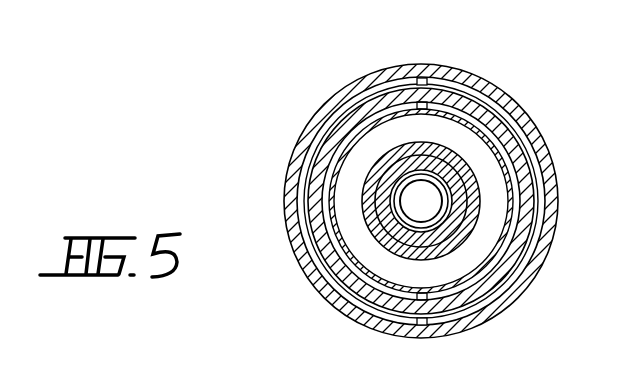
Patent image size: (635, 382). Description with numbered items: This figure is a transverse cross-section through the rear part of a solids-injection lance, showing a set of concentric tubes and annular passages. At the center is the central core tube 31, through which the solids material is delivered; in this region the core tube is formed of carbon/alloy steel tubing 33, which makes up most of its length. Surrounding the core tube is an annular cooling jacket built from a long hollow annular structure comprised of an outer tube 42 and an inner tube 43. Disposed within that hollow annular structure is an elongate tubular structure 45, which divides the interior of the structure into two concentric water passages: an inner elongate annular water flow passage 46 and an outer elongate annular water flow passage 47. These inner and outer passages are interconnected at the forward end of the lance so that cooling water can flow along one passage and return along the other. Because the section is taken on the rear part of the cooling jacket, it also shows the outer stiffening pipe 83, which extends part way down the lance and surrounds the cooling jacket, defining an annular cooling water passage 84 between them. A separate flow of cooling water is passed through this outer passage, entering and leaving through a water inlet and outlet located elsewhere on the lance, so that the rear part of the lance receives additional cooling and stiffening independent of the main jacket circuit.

The central core tube 31 is at (496, 178).
The carbon/alloy steel tubing 33 is at (448, 168).
The outer tube 42 is at (335, 273).
The inner tube 43 is at (367, 196).
The elongate tubular structure 45 is at (340, 160).
The inner elongate annular water flow passage 46 is at (388, 132).
The outer elongate annular water flow passage 47 is at (460, 88).
The outer stiffening pipe 83 is at (550, 227).
The annular cooling water passage 84 is at (532, 247).